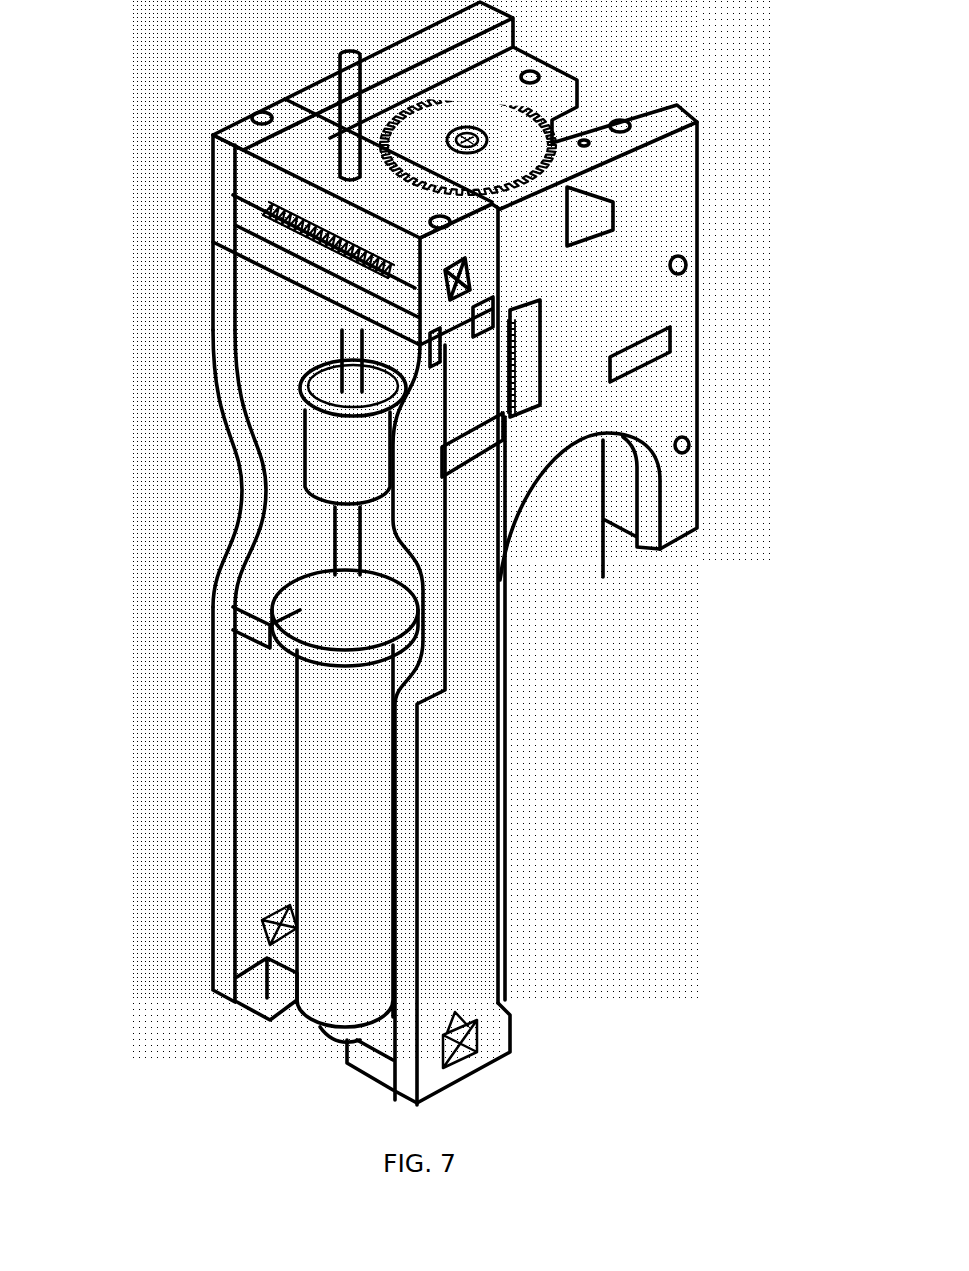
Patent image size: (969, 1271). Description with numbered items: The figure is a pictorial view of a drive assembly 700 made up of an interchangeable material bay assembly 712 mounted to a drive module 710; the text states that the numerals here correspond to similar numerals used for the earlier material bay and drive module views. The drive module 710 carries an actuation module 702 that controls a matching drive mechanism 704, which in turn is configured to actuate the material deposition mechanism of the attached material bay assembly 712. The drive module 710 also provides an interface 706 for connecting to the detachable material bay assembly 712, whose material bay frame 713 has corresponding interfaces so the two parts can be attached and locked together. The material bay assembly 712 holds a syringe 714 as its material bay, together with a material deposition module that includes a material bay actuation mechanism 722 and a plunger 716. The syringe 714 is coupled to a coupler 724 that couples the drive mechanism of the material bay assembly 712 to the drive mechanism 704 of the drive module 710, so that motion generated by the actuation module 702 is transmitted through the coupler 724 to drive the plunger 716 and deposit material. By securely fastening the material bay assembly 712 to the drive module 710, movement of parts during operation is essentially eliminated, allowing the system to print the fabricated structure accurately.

The drive assembly 700 is at (714, 52).
The actuation module 702 is at (577, 583).
The drive mechanism 704 is at (475, 110).
The interface 706 is at (518, 343).
The drive module 710 is at (695, 405).
The interchangeable material bay assembly 712 is at (219, 846).
The material bay frame 713 is at (240, 527).
The syringe 714 is at (322, 714).
The plunger 716 is at (350, 73).
The material bay actuation mechanism 722 is at (300, 227).
The coupler 724 is at (322, 434).